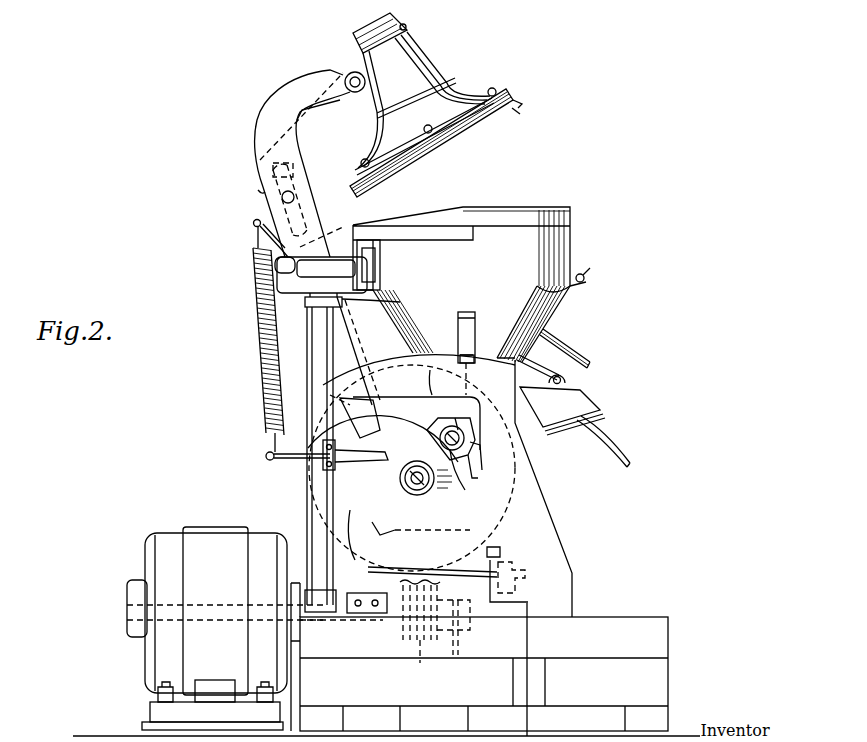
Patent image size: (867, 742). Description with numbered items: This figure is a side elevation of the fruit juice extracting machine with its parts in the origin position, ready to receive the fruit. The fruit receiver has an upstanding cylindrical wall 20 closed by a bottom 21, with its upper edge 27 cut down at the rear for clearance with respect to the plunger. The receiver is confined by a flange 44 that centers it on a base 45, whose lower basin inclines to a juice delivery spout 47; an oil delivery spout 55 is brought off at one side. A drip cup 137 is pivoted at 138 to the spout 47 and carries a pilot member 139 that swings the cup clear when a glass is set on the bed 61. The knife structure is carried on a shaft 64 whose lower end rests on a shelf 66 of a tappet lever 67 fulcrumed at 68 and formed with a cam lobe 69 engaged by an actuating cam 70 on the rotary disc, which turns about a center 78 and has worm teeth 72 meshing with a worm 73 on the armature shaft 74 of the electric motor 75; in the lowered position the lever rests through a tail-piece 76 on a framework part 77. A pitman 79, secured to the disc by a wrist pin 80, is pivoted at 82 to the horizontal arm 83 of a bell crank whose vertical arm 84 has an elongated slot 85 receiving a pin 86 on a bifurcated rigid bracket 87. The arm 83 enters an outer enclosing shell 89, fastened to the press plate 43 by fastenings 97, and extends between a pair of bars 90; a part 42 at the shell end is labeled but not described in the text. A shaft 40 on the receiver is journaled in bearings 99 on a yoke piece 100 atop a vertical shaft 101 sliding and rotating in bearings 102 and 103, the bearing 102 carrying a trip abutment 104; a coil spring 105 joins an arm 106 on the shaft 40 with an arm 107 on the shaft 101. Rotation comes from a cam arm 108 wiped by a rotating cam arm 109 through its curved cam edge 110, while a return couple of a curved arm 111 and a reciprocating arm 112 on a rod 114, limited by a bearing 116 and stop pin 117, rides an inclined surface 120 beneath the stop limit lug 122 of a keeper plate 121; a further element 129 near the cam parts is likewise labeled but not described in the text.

The cylindrical wall 20 is at (575, 252).
The bottom 21 is at (560, 298).
The upper edge 27 is at (565, 206).
The shaft 40 is at (378, 262).
The flange 42 is at (521, 114).
The press plate 43 is at (522, 105).
The flange 44 is at (592, 270).
The base 45 is at (586, 283).
The juice delivery spout 47 is at (588, 366).
The oil delivery spout 55 is at (457, 325).
The foundation part 61 is at (668, 617).
The shaft 64 is at (462, 374).
The shelf 66 is at (470, 430).
The tappet lever 67 is at (430, 376).
The fulcrum 68 is at (368, 388).
The cam lobe 69 is at (383, 438).
The actuating cam 70 is at (339, 467).
The worm teeth 72 is at (503, 554).
The worm 73 is at (419, 656).
The armature shaft 74 is at (470, 624).
The electric motor 75 is at (145, 650).
The tail-piece 76 is at (362, 418).
The framework part 77 is at (432, 521).
The center 78 is at (410, 492).
The pitman 79 is at (258, 142).
The wrist pin 80 is at (463, 480).
The pivot 82 is at (352, 72).
The horizontal arm 83 is at (318, 116).
The vertical arm 84 is at (258, 190).
The elongated slot 85 is at (295, 170).
The pin 86 is at (298, 185).
The bifurcated rigid bracket 87 is at (306, 203).
The outer enclosing shell 89 is at (430, 66).
The bars 90 is at (404, 24).
The fastenings 97 is at (494, 88).
The bearings 99 is at (327, 247).
The yoke piece 100 is at (304, 303).
The vertical shaft 101 is at (320, 331).
The bearing 102 is at (347, 343).
The bearing 103 is at (315, 614).
The trip abutment 104 is at (382, 274).
The coil spring 105 is at (257, 348).
The arm 106 is at (254, 221).
The arm 107 is at (268, 461).
The cam arm 108 is at (361, 467).
The cam arm 109 is at (480, 468).
The cam edge 110 is at (478, 455).
The curved arm 111 is at (340, 643).
The reciprocating arm 112 is at (362, 614).
The reciprocating rod 114 is at (526, 572).
The bearing 116 is at (520, 595).
The stop pin 117 is at (478, 560).
The inclined surface 120 is at (381, 495).
The keeper plate 121 is at (395, 566).
The stop limit lug 122 is at (360, 530).
The lever 129 is at (390, 523).
The drip cup 137 is at (592, 389).
The pivot 138 is at (562, 378).
The pilot member 139 is at (607, 447).